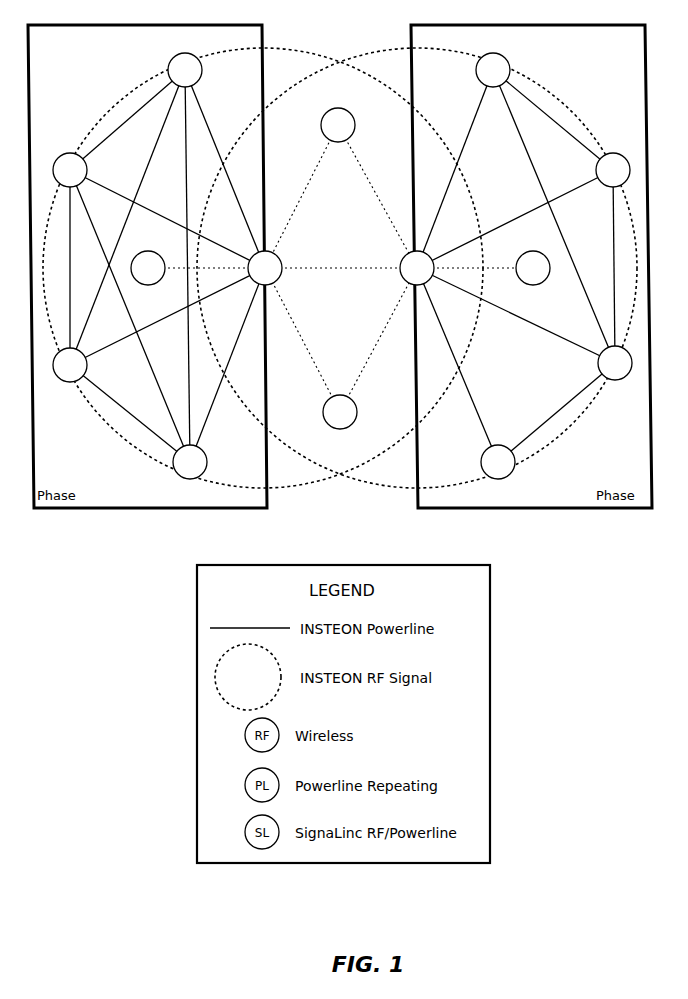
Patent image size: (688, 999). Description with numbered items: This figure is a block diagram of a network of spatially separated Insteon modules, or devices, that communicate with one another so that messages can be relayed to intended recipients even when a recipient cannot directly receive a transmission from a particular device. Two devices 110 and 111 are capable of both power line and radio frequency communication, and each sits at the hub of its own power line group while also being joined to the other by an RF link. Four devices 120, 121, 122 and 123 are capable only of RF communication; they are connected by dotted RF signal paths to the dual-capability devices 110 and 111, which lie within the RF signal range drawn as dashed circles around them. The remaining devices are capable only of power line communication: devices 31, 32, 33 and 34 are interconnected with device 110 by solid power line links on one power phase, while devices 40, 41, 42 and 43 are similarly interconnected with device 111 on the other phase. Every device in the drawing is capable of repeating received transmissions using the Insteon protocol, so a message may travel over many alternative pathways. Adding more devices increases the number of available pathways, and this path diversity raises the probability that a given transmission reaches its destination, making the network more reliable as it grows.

The power line device 31 is at (62, 153).
The power line device 32 is at (63, 382).
The power line device 33 is at (178, 476).
The power line device 34 is at (171, 60).
The power line device 40 is at (507, 58).
The power line device 41 is at (620, 154).
The power line device 42 is at (624, 380).
The power line device 43 is at (512, 474).
The power line and RF device 110 is at (280, 278).
The power line and RF device 111 is at (401, 257).
The RF device 120 is at (140, 284).
The RF device 121 is at (354, 130).
The RF device 122 is at (323, 412).
The RF device 123 is at (540, 284).